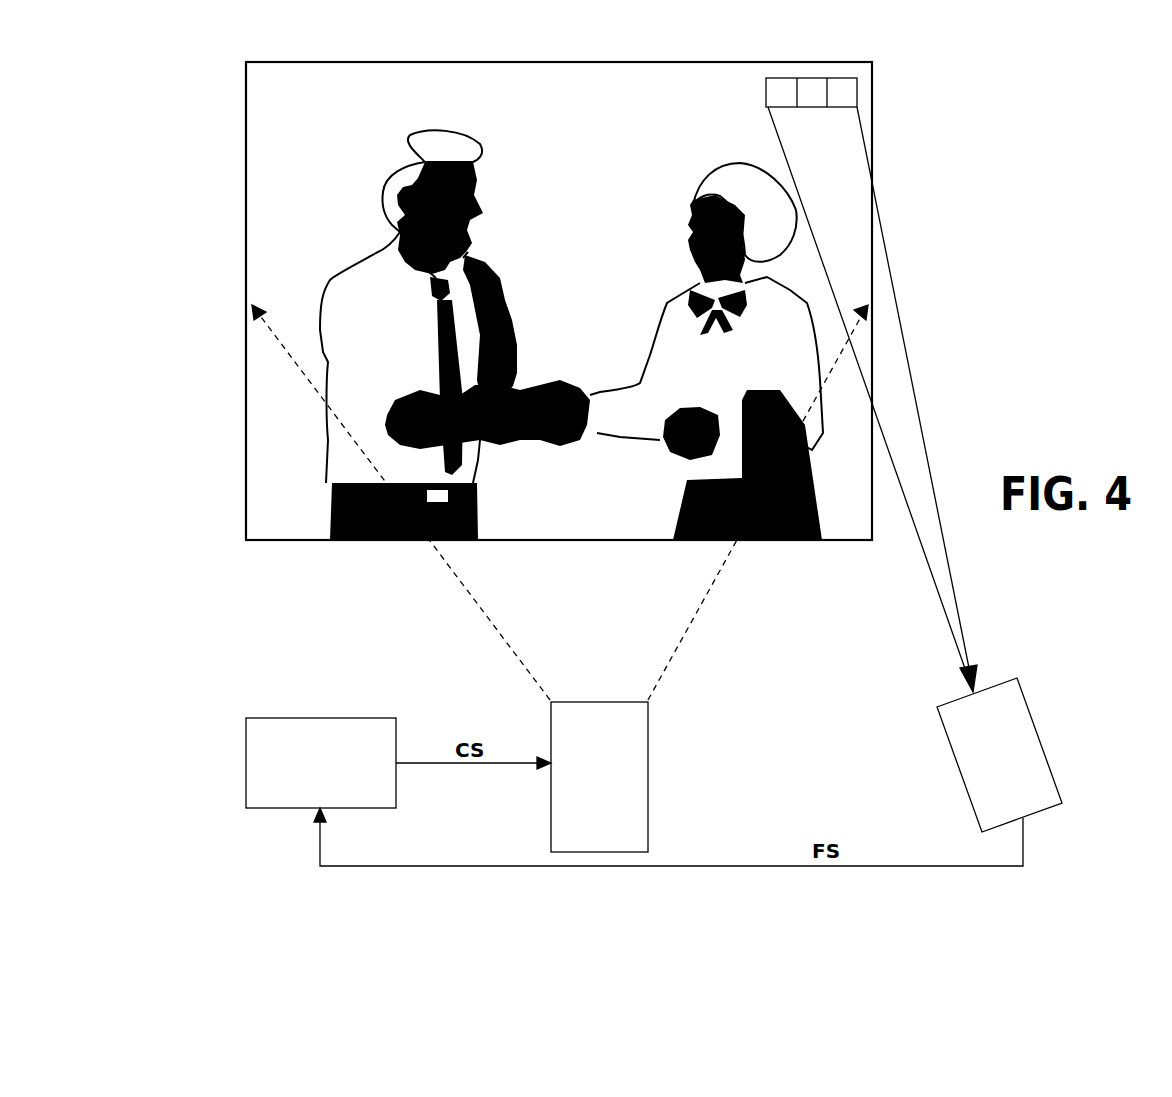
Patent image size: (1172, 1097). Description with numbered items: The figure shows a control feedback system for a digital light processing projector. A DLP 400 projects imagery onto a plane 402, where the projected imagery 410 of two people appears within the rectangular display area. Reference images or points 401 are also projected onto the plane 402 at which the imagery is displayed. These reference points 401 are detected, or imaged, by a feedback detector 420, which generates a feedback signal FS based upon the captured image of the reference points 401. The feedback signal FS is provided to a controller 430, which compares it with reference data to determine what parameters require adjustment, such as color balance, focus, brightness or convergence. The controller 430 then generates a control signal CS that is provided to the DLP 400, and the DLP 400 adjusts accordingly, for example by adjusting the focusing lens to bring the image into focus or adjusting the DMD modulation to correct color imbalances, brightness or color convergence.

The DLP 400 is at (648, 775).
The reference images/points 401 is at (845, 78).
The plane 402 is at (247, 120).
The projected image 410 is at (258, 221).
The feedback detector 420 is at (1043, 705).
The controller 430 is at (337, 718).